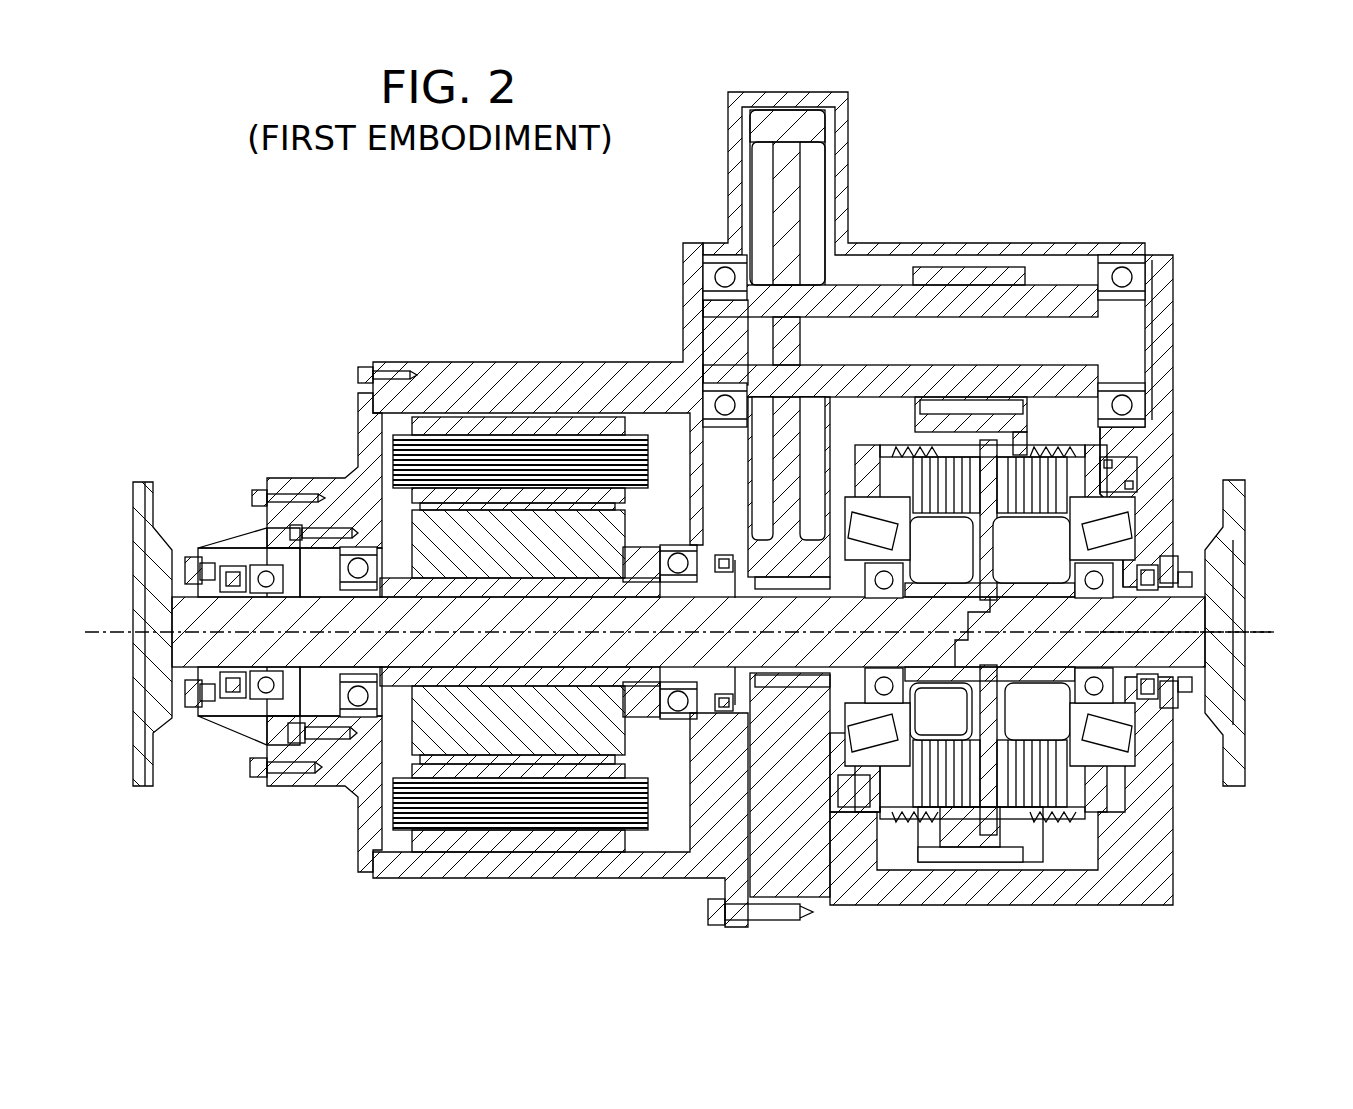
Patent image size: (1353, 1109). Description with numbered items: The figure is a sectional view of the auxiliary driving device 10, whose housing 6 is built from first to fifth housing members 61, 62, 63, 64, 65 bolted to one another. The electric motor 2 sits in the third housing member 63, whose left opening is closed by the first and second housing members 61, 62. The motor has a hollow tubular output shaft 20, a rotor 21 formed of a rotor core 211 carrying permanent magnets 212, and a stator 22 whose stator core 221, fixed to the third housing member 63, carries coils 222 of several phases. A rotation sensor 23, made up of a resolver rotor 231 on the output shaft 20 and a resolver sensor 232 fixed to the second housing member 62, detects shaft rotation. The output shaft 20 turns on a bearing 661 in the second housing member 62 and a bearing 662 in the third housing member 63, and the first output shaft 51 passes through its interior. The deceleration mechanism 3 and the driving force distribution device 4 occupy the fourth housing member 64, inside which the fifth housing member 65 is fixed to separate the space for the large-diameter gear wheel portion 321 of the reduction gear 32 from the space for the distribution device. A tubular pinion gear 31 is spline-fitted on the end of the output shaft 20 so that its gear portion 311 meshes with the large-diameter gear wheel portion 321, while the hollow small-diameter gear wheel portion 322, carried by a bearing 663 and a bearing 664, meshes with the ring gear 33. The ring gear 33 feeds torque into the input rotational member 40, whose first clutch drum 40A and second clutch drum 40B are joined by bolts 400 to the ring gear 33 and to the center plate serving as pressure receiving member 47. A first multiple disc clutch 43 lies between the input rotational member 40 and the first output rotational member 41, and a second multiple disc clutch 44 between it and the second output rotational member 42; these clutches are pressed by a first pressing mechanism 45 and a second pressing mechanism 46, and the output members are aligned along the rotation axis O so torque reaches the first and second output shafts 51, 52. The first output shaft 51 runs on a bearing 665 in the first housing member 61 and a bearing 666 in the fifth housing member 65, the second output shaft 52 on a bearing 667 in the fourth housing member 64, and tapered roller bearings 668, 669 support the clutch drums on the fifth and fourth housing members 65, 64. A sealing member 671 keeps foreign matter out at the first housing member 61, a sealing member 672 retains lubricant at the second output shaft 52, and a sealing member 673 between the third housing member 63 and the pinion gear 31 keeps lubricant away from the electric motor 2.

The auxiliary driving device 10 is at (292, 268).
The rotation axis O is at (1265, 632).
The electric motor 2 is at (441, 630).
The output shaft 20 is at (645, 547).
The rotor 21 is at (435, 647).
The rotor core 211 is at (390, 768).
The permanent magnets 212 is at (390, 796).
The stator 22 is at (490, 728).
The stator core 221 is at (530, 845).
The coils 222 is at (505, 813).
The rotation sensor 23 is at (238, 680).
The resolver rotor 231 is at (300, 705).
The resolver sensor 232 is at (325, 700).
The deceleration mechanism 3 is at (908, 492).
The pinion gear 31 is at (790, 700).
The gear portion 311 is at (778, 700).
The reduction gear 32 is at (873, 283).
The large-diameter gear wheel portion 321 is at (815, 112).
The small-diameter gear wheel portion 322 is at (1015, 272).
The ring gear 33 is at (1022, 422).
The driving force distribution device 4 is at (905, 850).
The input rotational member 40 is at (982, 715).
The first clutch drum 40A is at (975, 832).
The second clutch drum 40B is at (1033, 832).
The bolts 400 is at (1027, 446).
The first output rotational member 41 is at (937, 587).
The second output rotational member 42 is at (1010, 590).
The first multiple disc clutch 43 is at (958, 528).
The second multiple disc clutch 44 is at (1040, 528).
The first pressing mechanism 45 is at (847, 812).
The second pressing mechanism 46 is at (1162, 450).
The pressure receiving member 47 is at (990, 755).
The first output shaft 51 is at (168, 595).
The second output shaft 52 is at (1210, 590).
The housing 6 is at (1178, 302).
The first housing member 61 is at (228, 560).
The second housing member 62 is at (362, 417).
The third housing member 63 is at (565, 372).
The fourth housing member 64 is at (1102, 887).
The fifth housing member 65 is at (850, 885).
The bearing 661 is at (352, 555).
The bearing 662 is at (675, 715).
The bearing 663 is at (718, 262).
The bearing 664 is at (1132, 265).
The bearing 665 is at (262, 555).
The bearing 666 is at (905, 690).
The bearing 667 is at (1190, 570).
The tapered roller bearing 668 is at (905, 728).
The tapered roller bearing 669 is at (1167, 492).
The sealing member 671 is at (197, 710).
The sealing member 672 is at (1170, 720).
The sealing member 673 is at (738, 720).